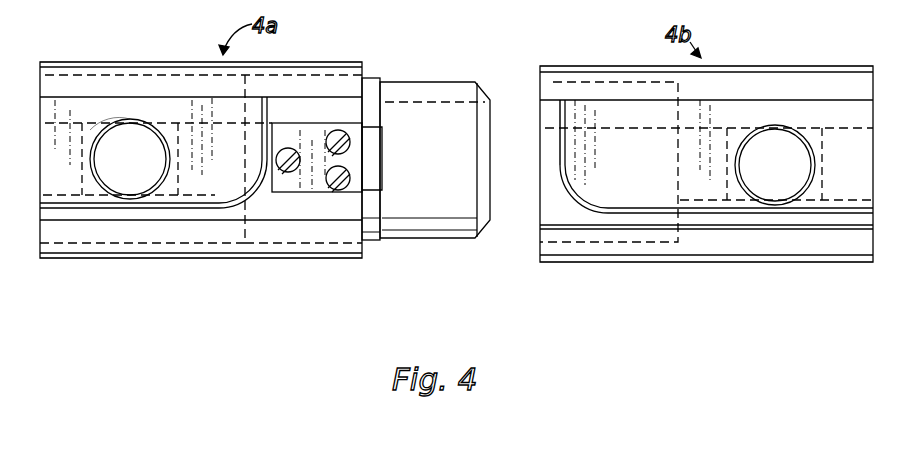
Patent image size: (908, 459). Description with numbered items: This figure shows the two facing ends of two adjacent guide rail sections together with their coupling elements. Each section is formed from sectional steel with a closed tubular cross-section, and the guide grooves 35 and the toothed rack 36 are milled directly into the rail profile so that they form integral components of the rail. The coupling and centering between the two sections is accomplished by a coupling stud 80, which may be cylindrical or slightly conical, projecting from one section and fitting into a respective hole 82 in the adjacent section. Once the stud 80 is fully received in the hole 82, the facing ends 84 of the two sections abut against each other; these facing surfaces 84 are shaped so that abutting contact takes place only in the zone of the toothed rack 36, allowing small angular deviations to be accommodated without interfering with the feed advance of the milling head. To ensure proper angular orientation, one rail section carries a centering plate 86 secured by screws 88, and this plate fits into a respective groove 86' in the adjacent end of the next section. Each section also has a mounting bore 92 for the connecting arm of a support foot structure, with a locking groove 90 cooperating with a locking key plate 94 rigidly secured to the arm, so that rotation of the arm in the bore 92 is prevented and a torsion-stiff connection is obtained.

The guide grooves 35 is at (50, 247).
The toothed rack 36 is at (308, 67).
The coupling stud 80 is at (430, 88).
The hole 82 is at (577, 80).
The facing ends 84 is at (363, 75).
The centering plate 86 is at (327, 211).
The groove 86' is at (533, 153).
The screws 88 is at (345, 182).
The locking groove 90 is at (262, 197).
The mounting bore 92 is at (118, 190).
The locking key plate 94 is at (90, 130).